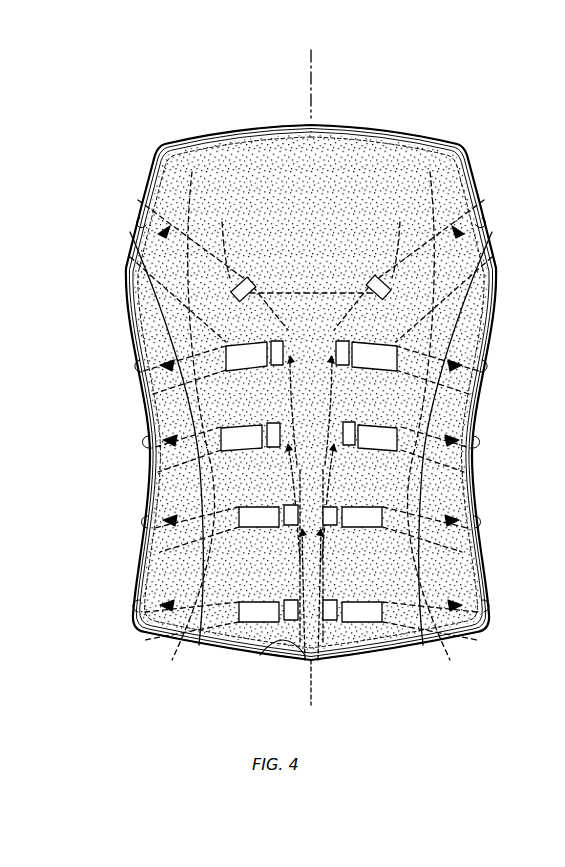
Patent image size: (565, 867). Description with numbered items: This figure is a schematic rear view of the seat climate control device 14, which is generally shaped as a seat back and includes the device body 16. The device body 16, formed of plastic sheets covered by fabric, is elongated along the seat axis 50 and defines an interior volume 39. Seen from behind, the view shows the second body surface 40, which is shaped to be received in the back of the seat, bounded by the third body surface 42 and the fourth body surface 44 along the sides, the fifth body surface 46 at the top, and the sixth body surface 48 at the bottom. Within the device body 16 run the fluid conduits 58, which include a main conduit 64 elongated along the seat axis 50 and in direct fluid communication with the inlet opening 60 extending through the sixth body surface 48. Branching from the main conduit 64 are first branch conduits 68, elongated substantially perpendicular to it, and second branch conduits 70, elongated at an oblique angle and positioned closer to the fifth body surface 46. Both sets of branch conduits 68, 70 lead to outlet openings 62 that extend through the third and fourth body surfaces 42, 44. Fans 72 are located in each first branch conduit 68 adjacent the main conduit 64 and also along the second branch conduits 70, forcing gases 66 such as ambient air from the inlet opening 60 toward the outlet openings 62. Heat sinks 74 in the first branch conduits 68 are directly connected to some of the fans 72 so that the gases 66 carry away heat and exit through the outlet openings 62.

The climate control device 14 is at (466, 150).
The device body 16 is at (474, 173).
The interior volume 39 is at (124, 272).
The second body surface 40 is at (450, 276).
The third body surface 42 is at (470, 416).
The fourth body surface 44 is at (150, 416).
The fifth body surface 46 is at (380, 128).
The sixth body surface 48 is at (360, 660).
The seat axis 50 is at (311, 55).
The fluid conduits 58 is at (311, 427).
The inlet opening 60 is at (260, 655).
The outlet openings 62 is at (143, 219).
The main conduit 64 is at (325, 652).
The gases 66 is at (150, 186).
The first branch conduits 68 is at (311, 438).
The second branch conduits 70 is at (310, 240).
The fans 72 is at (245, 280).
The heat sinks 74 is at (246, 345).